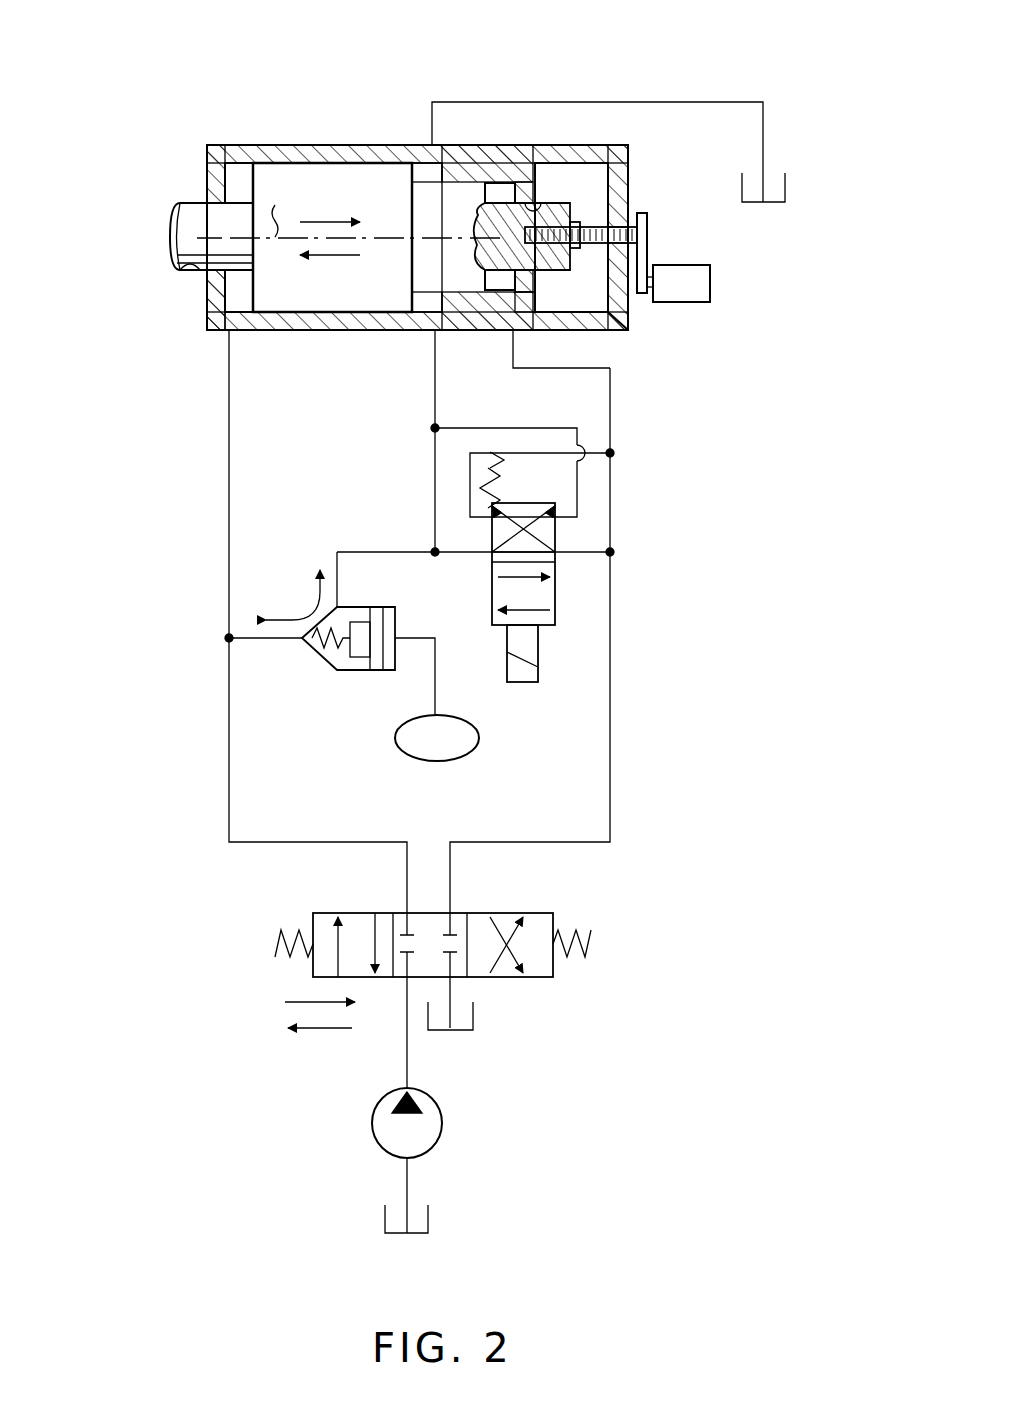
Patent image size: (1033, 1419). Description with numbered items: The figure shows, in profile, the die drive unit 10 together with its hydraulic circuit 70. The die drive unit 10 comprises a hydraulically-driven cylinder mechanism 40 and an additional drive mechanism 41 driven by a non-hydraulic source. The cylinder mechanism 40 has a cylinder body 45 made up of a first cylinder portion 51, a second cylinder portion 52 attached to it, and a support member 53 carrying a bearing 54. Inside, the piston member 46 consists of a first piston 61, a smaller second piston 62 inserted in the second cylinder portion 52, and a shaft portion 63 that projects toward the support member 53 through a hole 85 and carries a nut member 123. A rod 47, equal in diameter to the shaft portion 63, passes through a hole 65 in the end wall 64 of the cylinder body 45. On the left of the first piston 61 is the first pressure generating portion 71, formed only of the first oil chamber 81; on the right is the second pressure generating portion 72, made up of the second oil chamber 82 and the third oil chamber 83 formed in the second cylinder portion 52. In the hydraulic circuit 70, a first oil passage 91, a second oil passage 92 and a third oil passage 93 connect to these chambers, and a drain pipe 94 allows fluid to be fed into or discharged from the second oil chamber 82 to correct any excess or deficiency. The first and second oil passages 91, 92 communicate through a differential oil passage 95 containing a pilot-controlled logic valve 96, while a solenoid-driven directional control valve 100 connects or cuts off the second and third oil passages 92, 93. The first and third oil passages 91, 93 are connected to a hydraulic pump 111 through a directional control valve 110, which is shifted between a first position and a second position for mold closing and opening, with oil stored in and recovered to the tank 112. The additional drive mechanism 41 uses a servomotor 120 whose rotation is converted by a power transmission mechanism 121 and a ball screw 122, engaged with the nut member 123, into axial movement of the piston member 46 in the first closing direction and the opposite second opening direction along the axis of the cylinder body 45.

The die drive unit 10 is at (300, 105).
The cylinder mechanism 40 is at (200, 185).
The additional drive mechanism 41 is at (688, 313).
The cylinder body 45 is at (340, 145).
The piston member 46 is at (297, 300).
The rod 47 is at (200, 227).
The first cylinder portion 51 is at (275, 145).
The second cylinder portion 52 is at (490, 145).
The support member 53 is at (590, 145).
The bearing 54 is at (625, 197).
The first piston 61 is at (372, 185).
The second piston 62 is at (455, 190).
The shaft portion 63 is at (522, 246).
The end wall 64 is at (200, 292).
The hole 65 is at (200, 267).
The hydraulic circuit 70 is at (718, 628).
The first pressure generating portion 71 is at (235, 162).
The second pressure generating portion 72 is at (420, 162).
The first oil chamber 81 is at (238, 293).
The second oil chamber 82 is at (414, 318).
The third oil chamber 83 is at (493, 330).
The hole 85 is at (540, 208).
The first oil passage 91 is at (228, 437).
The second oil passage 92 is at (432, 392).
The third oil passage 93 is at (610, 415).
The drain pipe 94 is at (640, 102).
The differential oil passage 95 is at (353, 552).
The logic valve 96 is at (330, 670).
The directional control valve 100 is at (545, 630).
The directional control valve 110 is at (483, 913).
The hydraulic pump 111 is at (443, 1123).
The tank 112 is at (473, 1018).
The servomotor 120 is at (710, 283).
The power transmission mechanism 121 is at (648, 250).
The ball screw 122 is at (647, 232).
The nut member 123 is at (630, 327).